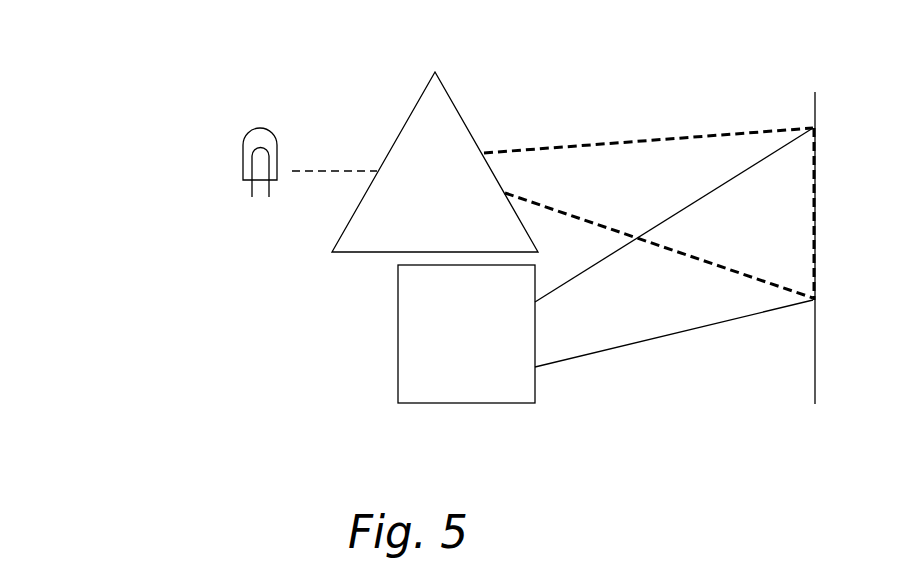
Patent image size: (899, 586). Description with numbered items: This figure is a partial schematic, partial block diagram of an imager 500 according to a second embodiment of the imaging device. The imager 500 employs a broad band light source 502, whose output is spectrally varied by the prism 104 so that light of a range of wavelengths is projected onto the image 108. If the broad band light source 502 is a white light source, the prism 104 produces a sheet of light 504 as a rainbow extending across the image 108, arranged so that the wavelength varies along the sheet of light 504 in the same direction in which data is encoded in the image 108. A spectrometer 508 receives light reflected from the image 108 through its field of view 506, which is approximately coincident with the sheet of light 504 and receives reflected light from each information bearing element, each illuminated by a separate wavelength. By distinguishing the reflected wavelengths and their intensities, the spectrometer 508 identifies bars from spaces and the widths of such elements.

The imager 500 is at (113, 278).
The broad band light source 502 is at (237, 120).
The prism 104 is at (450, 210).
The sheet of light 504 is at (605, 143).
The image 108 is at (813, 120).
The spectrometer 508 is at (340, 358).
The field of view 506 is at (592, 356).